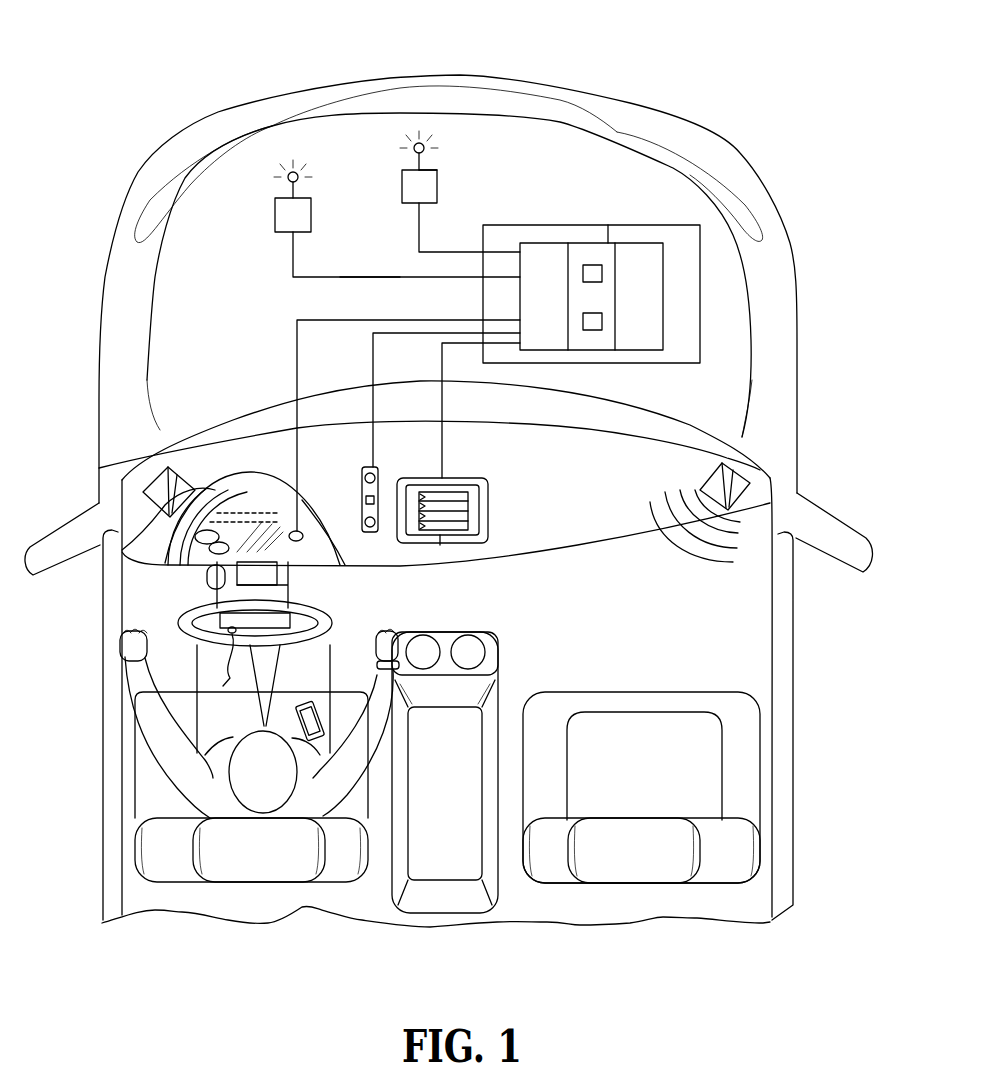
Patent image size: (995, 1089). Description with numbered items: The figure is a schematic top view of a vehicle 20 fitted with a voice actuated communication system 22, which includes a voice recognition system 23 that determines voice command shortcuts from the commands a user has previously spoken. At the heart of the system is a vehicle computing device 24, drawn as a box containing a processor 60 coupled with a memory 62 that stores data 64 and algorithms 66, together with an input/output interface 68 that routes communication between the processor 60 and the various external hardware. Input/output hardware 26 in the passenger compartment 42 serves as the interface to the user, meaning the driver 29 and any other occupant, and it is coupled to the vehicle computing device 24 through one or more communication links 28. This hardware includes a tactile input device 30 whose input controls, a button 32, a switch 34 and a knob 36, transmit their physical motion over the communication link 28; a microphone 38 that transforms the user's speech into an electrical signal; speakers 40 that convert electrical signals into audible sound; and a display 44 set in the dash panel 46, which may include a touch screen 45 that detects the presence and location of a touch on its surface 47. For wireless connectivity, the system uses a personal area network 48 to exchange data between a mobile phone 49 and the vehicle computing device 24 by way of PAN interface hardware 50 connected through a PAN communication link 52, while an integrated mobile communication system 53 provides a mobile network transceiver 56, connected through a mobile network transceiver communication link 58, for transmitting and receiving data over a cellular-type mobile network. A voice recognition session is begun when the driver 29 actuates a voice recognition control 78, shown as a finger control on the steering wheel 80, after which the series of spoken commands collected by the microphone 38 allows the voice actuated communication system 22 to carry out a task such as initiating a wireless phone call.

The vehicle 20 is at (280, 96).
The voice actuated communication system 22 is at (533, 146).
The voice recognition system 23 is at (770, 325).
The vehicle computing device 24 is at (704, 305).
The input/output hardware 26 is at (162, 485).
The communication links 28 is at (478, 403).
The driver 29 is at (145, 778).
The tactile input device 30 is at (377, 468).
The button 32 is at (376, 477).
The switch 34 is at (365, 500).
The knob 36 is at (362, 530).
The microphone 38 is at (300, 542).
The speaker 40 is at (122, 550).
The passenger compartment 42 is at (646, 645).
The display 44 is at (490, 520).
The touch screen 45 is at (443, 545).
The dash panel 46 is at (580, 553).
The surface 47 is at (477, 490).
The personal area network 48 is at (440, 163).
The mobile phone 49 is at (327, 716).
The PAN interface hardware 50 is at (402, 180).
The PAN communication link 52 is at (452, 252).
The integrated mobile communication system 53 is at (286, 258).
The mobile network transceiver 56 is at (275, 213).
The mobile network transceiver communication link 58 is at (367, 277).
The processor 60 is at (701, 255).
The memory 62 is at (608, 225).
The data 64 is at (590, 265).
The algorithms 66 is at (593, 331).
The input/output interface 68 is at (542, 352).
The voice recognition control 78 is at (224, 668).
The steering wheel 80 is at (185, 615).